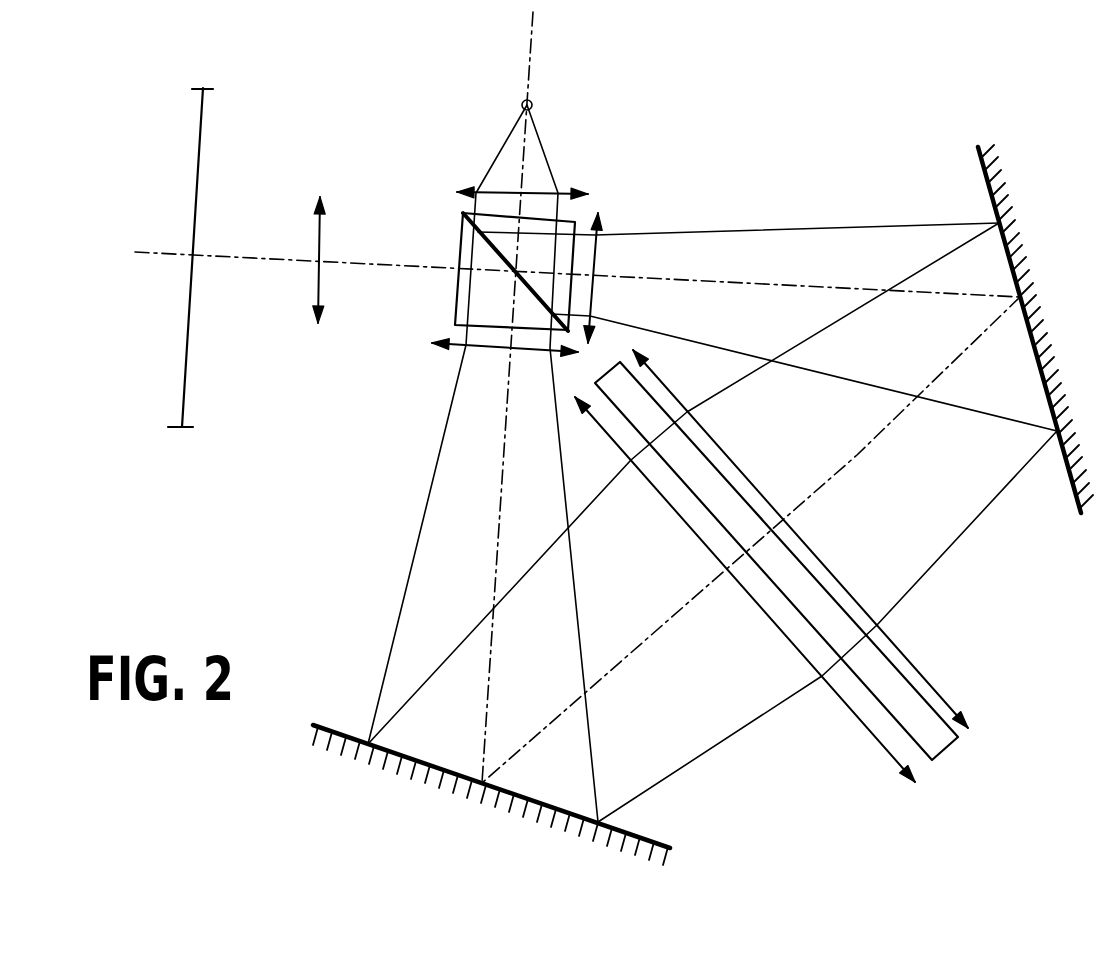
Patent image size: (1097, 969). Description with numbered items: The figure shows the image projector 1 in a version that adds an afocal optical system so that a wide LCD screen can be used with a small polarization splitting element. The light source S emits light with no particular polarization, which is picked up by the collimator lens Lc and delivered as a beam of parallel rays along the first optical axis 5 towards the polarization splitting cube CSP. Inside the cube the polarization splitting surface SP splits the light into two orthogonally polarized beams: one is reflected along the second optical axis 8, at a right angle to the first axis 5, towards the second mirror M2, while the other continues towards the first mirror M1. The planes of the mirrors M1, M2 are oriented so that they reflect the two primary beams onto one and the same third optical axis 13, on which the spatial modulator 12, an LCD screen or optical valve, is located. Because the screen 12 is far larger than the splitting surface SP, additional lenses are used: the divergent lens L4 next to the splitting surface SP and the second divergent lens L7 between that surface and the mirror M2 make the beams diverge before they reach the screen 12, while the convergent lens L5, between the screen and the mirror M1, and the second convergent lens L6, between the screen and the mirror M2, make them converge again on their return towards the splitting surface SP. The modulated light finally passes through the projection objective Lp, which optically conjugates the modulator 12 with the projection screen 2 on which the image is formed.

The image projector 1 is at (862, 73).
The projection screen 2 is at (205, 96).
The first optical axis 5 is at (532, 60).
The second optical axis 8 is at (383, 262).
The spatial modulator of light 12 is at (948, 750).
The third optical axis 13 is at (858, 456).
The light source S is at (522, 102).
The polarization splitting surface SP is at (460, 240).
The polarization splitting cube CSP is at (455, 306).
The additional divergent lens L4 is at (452, 347).
The additional convergent lens L5 is at (878, 742).
The second additional convergent lens L6 is at (918, 672).
The second divergent lens L7 is at (598, 252).
The collimator lens Lc is at (543, 187).
The projection objective Lp is at (316, 226).
The first mirror M1 is at (670, 848).
The second mirror M2 is at (1072, 498).